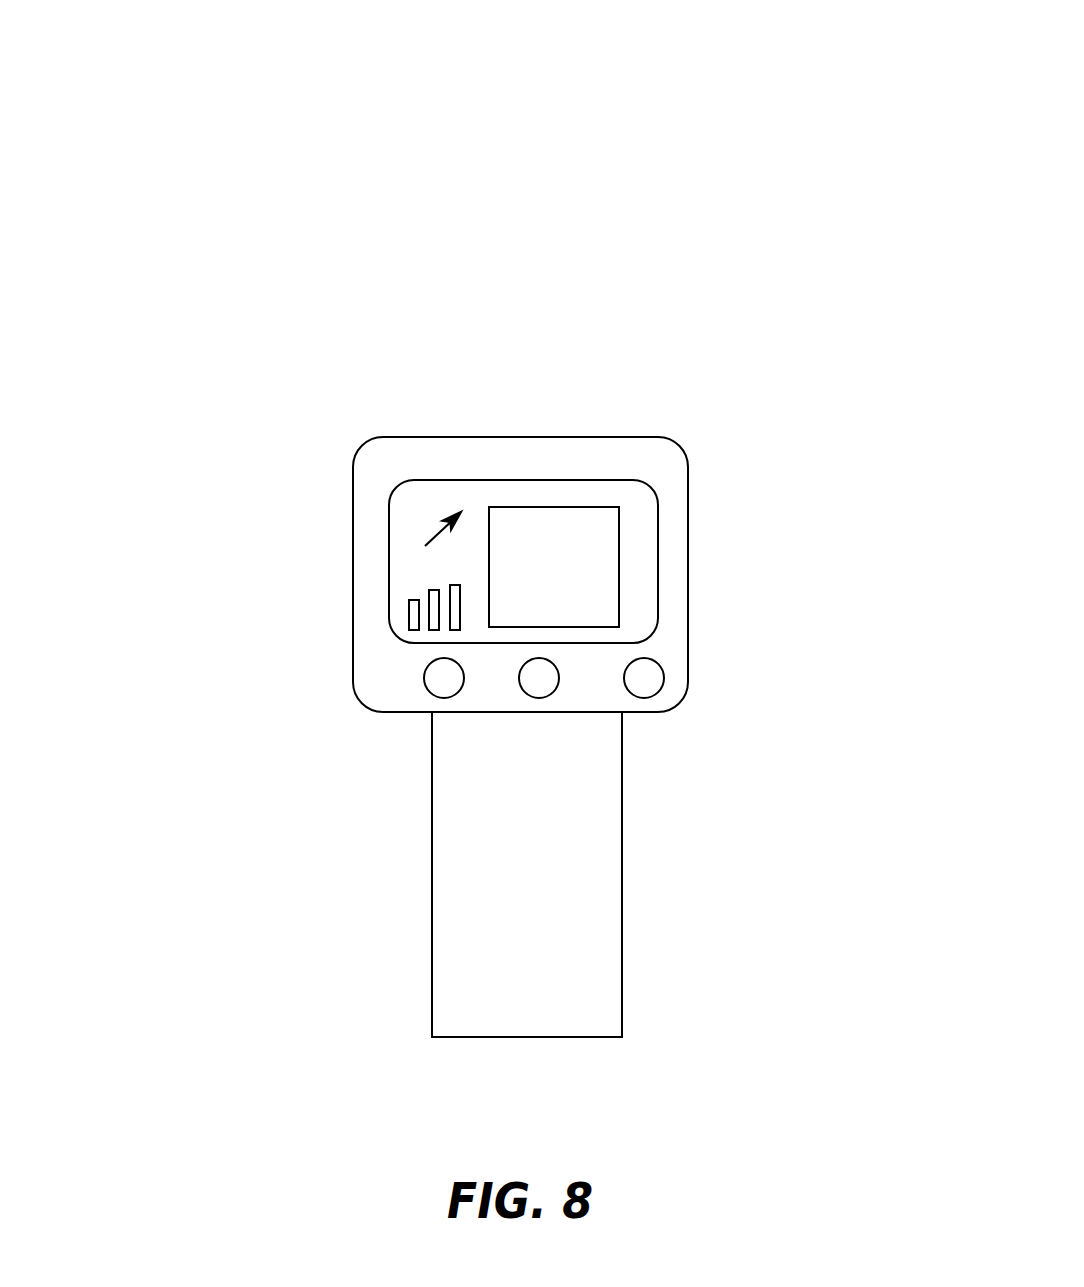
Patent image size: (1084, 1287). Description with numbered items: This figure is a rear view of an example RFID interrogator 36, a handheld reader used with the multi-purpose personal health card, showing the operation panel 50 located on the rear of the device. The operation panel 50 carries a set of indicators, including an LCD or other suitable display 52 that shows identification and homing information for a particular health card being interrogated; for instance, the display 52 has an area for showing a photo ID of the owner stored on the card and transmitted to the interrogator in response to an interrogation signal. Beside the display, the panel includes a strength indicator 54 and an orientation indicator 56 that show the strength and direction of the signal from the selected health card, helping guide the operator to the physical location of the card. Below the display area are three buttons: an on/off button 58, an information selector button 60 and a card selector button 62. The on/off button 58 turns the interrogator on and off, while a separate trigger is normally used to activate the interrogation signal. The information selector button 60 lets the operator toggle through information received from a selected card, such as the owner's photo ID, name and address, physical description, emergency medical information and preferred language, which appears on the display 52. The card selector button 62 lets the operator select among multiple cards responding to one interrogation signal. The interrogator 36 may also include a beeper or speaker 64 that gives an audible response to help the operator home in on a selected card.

The RFID interrogator 36 is at (475, 548).
The operation panel 50 is at (418, 545).
The display 52 is at (553, 423).
The strength indicator 54 is at (272, 675).
The orientation indicator 56 is at (462, 395).
The on/off button 58 is at (437, 677).
The information selector button 60 is at (537, 683).
The card selector button 62 is at (643, 682).
The speaker 64 is at (784, 419).